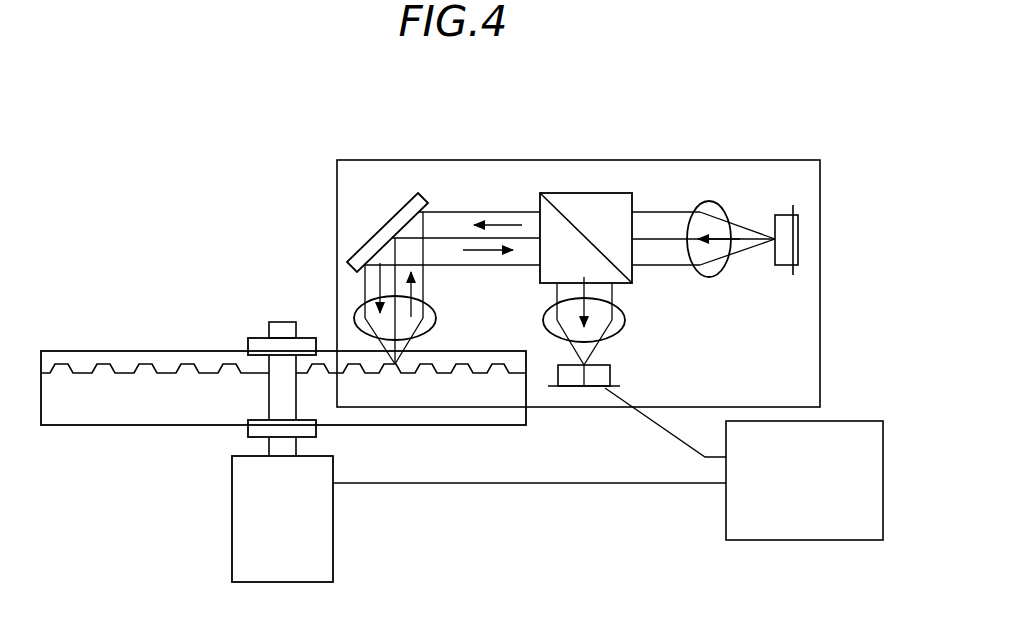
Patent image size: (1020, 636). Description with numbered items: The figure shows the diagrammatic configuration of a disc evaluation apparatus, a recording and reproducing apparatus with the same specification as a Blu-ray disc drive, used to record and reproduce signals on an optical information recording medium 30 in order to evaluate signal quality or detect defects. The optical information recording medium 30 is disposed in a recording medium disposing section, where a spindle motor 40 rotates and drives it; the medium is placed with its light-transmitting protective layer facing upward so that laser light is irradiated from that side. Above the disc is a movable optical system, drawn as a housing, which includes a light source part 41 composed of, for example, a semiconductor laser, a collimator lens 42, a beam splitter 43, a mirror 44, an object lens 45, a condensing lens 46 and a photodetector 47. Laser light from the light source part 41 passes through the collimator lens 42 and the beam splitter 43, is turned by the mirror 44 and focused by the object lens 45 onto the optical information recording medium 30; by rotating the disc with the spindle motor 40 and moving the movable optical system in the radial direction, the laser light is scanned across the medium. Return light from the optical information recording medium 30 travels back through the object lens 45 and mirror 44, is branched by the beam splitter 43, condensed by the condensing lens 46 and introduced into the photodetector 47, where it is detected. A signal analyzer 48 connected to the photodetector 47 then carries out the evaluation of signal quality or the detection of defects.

The optical information recording medium 30 is at (56, 351).
The spindle motor 40 is at (327, 519).
The light source part 41 is at (777, 214).
The collimator lens 42 is at (710, 201).
The beam splitter 43 is at (560, 193).
The mirror 44 is at (393, 195).
The object lens 45 is at (362, 308).
The condensing lens 46 is at (625, 318).
The photodetector 47 is at (564, 390).
The signal analyzer 48 is at (740, 540).